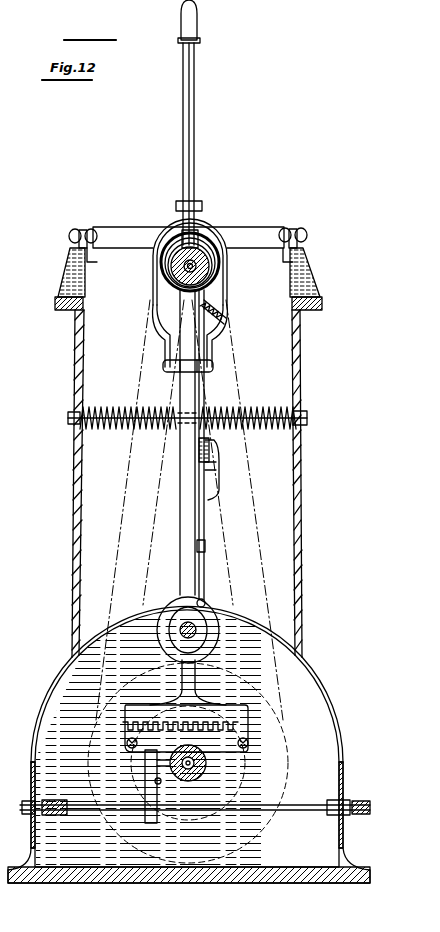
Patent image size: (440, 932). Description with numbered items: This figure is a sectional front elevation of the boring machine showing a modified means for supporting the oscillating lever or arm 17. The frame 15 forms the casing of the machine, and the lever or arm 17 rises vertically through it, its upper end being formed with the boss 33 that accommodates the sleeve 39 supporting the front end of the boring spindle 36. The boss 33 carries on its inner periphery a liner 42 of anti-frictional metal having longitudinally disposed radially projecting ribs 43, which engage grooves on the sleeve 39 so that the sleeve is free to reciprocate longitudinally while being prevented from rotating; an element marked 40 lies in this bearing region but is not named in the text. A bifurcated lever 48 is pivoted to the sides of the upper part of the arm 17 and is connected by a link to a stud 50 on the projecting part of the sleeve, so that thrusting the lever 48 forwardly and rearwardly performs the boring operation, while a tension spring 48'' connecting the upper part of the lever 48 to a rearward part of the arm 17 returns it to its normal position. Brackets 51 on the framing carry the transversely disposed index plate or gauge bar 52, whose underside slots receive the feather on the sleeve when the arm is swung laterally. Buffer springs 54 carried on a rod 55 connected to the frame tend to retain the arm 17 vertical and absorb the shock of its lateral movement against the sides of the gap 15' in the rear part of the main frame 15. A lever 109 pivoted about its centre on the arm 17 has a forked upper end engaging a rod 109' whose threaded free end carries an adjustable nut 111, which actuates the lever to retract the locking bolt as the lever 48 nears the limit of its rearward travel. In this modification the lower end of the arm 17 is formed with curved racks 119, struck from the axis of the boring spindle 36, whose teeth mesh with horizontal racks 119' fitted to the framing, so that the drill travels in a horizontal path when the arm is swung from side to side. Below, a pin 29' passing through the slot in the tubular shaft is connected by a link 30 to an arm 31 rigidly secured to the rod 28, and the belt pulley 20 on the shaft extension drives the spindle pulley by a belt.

The frame 15 is at (189, 596).
The gap 15' is at (170, 614).
The lever or arm 17 is at (183, 475).
The belt pulley 20 is at (266, 833).
The rod 28 is at (300, 804).
The pin 29' is at (205, 763).
The link 30 is at (145, 768).
The arm 31 is at (158, 782).
The boss 33 is at (160, 262).
The boring spindle 36 is at (170, 290).
The sleeve 39 is at (170, 274).
The bearing ring 40 is at (222, 278).
The liner 42 is at (212, 266).
The ribs 43 is at (218, 255).
The bifurcated lever 48 is at (209, 122).
The tension spring 48'' is at (233, 314).
The stud 50 is at (202, 245).
The brackets 51 is at (72, 274).
The index plate or gauge bar 52 is at (133, 227).
The buffer springs 54 is at (276, 412).
The rod 55 is at (306, 417).
The lever 109 is at (227, 448).
The rod 109' is at (244, 470).
The nut 111 is at (212, 444).
The curved racks 119 is at (185, 718).
The horizontal racks 119' is at (282, 746).